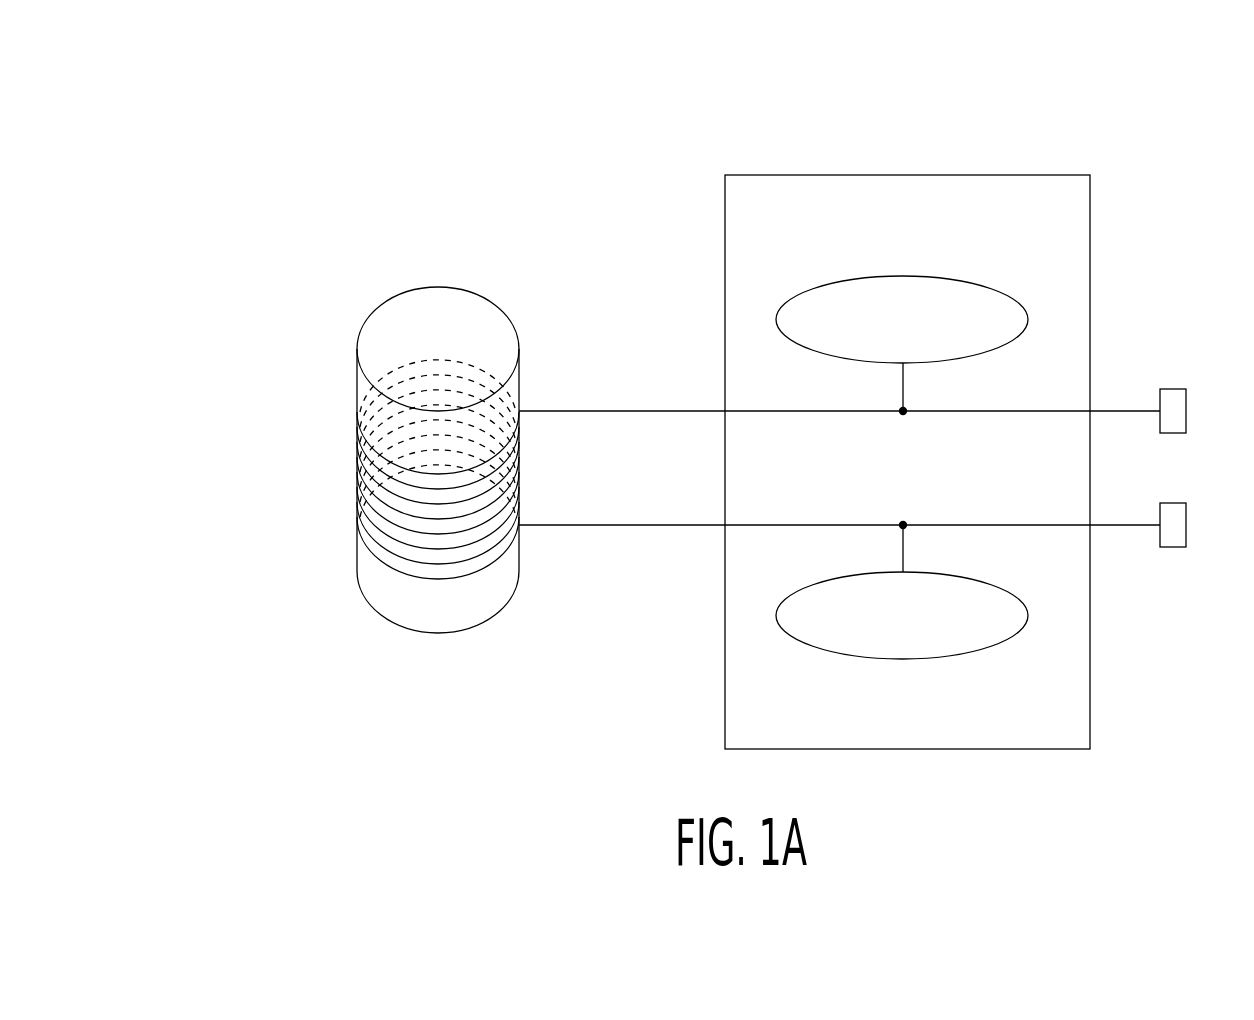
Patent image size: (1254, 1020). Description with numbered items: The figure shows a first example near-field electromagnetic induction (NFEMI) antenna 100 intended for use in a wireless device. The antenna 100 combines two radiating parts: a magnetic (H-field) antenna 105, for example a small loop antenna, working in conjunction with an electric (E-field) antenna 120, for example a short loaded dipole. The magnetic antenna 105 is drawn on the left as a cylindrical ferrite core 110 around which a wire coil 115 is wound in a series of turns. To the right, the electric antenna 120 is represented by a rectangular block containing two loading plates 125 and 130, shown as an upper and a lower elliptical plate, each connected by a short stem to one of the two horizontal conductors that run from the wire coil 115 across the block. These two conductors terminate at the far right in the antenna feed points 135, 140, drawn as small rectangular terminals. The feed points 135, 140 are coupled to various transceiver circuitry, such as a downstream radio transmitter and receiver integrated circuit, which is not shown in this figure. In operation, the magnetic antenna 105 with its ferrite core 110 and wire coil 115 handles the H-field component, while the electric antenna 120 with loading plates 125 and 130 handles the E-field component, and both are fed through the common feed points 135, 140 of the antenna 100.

The near-field electromagnetic induction antenna 100 is at (298, 142).
The magnetic antenna 105 is at (412, 262).
The ferrite core 110 is at (368, 314).
The wire coil 115 is at (357, 487).
The electric antenna 120 is at (1090, 197).
The loading plate 125 is at (995, 290).
The loading plate 130 is at (983, 650).
The feed point 135 is at (1173, 389).
The feed point 140 is at (1170, 547).